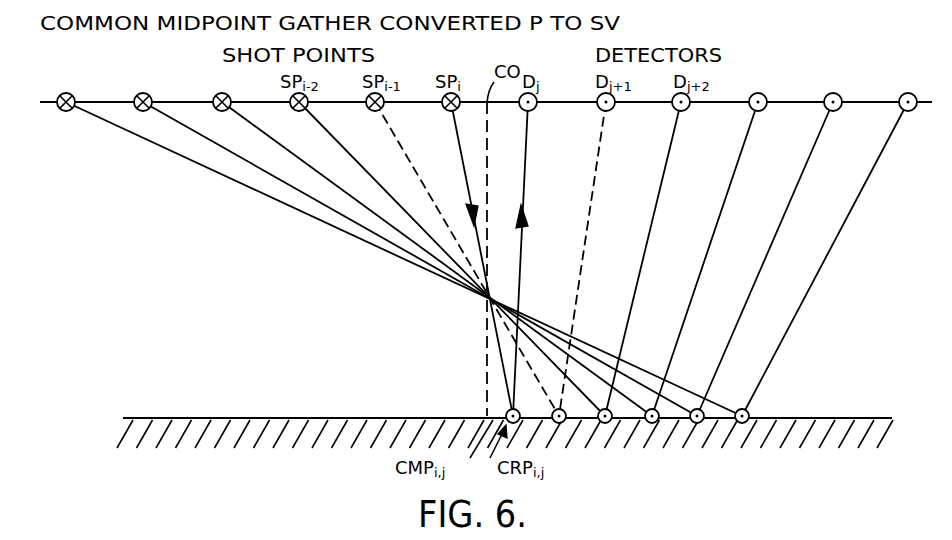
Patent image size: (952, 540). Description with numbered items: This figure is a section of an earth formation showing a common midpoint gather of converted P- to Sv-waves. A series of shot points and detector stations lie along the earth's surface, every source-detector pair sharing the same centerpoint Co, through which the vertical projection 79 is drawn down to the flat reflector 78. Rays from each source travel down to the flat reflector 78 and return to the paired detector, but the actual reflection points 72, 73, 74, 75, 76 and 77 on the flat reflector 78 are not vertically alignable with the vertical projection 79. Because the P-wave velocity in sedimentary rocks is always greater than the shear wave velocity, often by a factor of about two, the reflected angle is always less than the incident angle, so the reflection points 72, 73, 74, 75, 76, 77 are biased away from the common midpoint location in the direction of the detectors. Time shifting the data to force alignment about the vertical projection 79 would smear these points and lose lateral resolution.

The reflection point 72 is at (507, 412).
The reflection point 73 is at (563, 421).
The reflection point 74 is at (609, 421).
The reflection point 75 is at (655, 421).
The reflection point 76 is at (700, 421).
The reflection point 77 is at (749, 412).
The flat reflector 78 is at (882, 433).
The vertical projection 79 is at (486, 130).